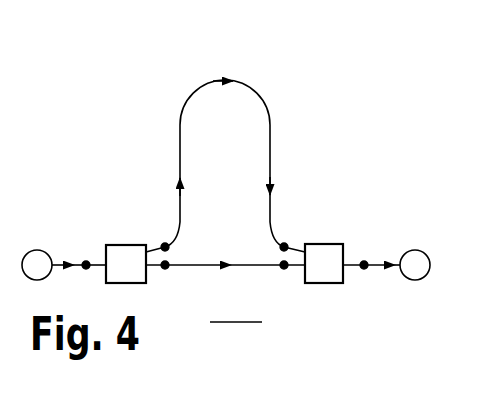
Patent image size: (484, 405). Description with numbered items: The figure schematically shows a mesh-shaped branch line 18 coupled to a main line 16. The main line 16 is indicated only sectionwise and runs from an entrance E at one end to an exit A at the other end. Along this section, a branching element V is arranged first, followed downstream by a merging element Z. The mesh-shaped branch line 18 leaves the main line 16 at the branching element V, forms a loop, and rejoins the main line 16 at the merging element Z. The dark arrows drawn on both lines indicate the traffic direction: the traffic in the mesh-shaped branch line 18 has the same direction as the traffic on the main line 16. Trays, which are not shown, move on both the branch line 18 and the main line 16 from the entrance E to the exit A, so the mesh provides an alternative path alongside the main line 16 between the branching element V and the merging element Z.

The main line 16 is at (276, 270).
The branch line 18 is at (190, 90).
The entrance E is at (37, 265).
The branching element V is at (126, 264).
The merging element Z is at (324, 263).
The exit A is at (415, 265).